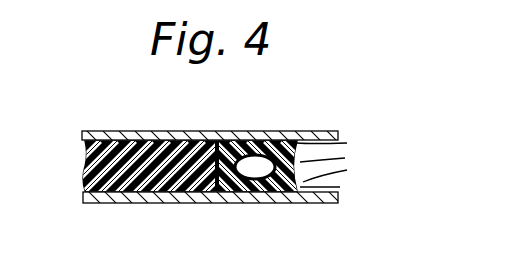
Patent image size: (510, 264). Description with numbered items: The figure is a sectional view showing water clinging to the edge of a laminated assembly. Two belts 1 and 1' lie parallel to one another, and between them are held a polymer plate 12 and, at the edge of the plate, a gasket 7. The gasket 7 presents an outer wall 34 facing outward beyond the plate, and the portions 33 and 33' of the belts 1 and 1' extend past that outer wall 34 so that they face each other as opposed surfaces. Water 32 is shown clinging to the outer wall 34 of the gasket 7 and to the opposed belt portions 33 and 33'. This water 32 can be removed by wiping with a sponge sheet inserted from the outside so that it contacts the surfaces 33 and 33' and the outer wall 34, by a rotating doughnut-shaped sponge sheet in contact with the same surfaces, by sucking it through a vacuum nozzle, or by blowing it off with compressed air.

The belt 1 is at (210, 117).
The belt 1' is at (212, 218).
The polymer plate 12 is at (105, 191).
The gasket 7 is at (270, 200).
The portion of the belt 33 is at (347, 129).
The outer wall 34 is at (345, 158).
The water 32 is at (347, 170).
The portion of the belt 33' is at (353, 188).